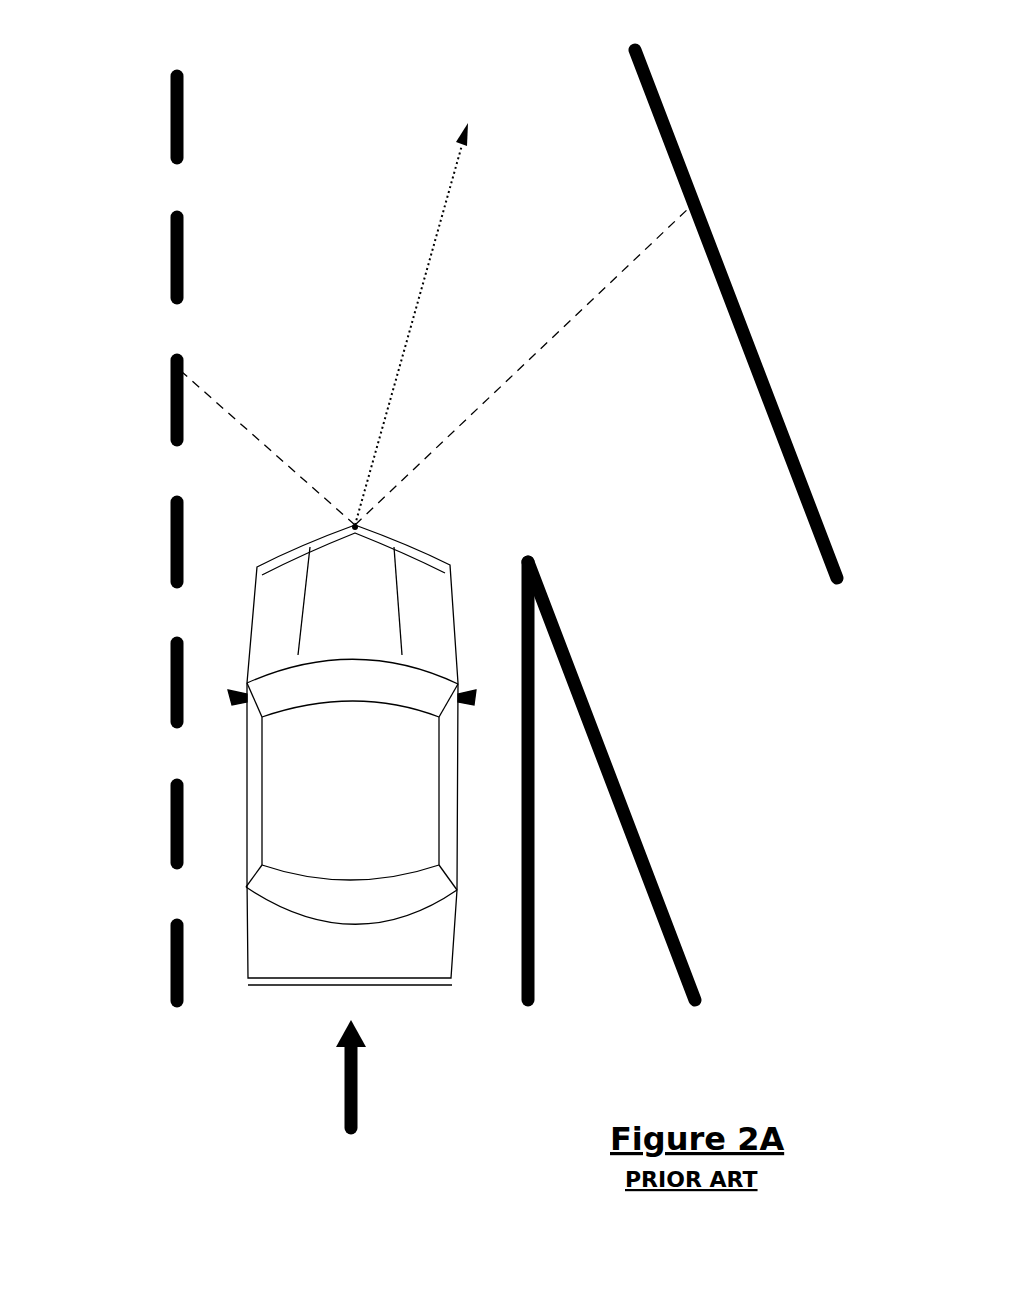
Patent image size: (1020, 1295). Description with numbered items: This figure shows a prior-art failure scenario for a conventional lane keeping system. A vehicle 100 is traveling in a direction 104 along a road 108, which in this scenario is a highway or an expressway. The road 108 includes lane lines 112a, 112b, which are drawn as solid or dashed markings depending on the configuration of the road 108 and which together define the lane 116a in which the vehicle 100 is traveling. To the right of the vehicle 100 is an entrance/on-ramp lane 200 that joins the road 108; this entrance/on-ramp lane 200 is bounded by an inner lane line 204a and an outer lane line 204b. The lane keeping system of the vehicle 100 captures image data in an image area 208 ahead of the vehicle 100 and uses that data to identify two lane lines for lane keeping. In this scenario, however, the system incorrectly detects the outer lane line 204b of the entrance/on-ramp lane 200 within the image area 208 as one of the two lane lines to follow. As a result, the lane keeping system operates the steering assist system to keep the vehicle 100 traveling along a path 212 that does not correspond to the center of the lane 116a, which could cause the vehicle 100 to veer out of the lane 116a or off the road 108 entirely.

The vehicle 100 is at (422, 985).
The direction 104 is at (345, 1093).
The road 108 is at (166, 1105).
The lane line 112a is at (535, 965).
The lane line 112b is at (184, 120).
The lane 116a is at (353, 70).
The entrance/on-ramp lane 200 is at (776, 790).
The inner lane line 204a is at (600, 726).
The outer lane line 204b is at (736, 292).
The image area 208 is at (318, 522).
The path 212 is at (422, 278).